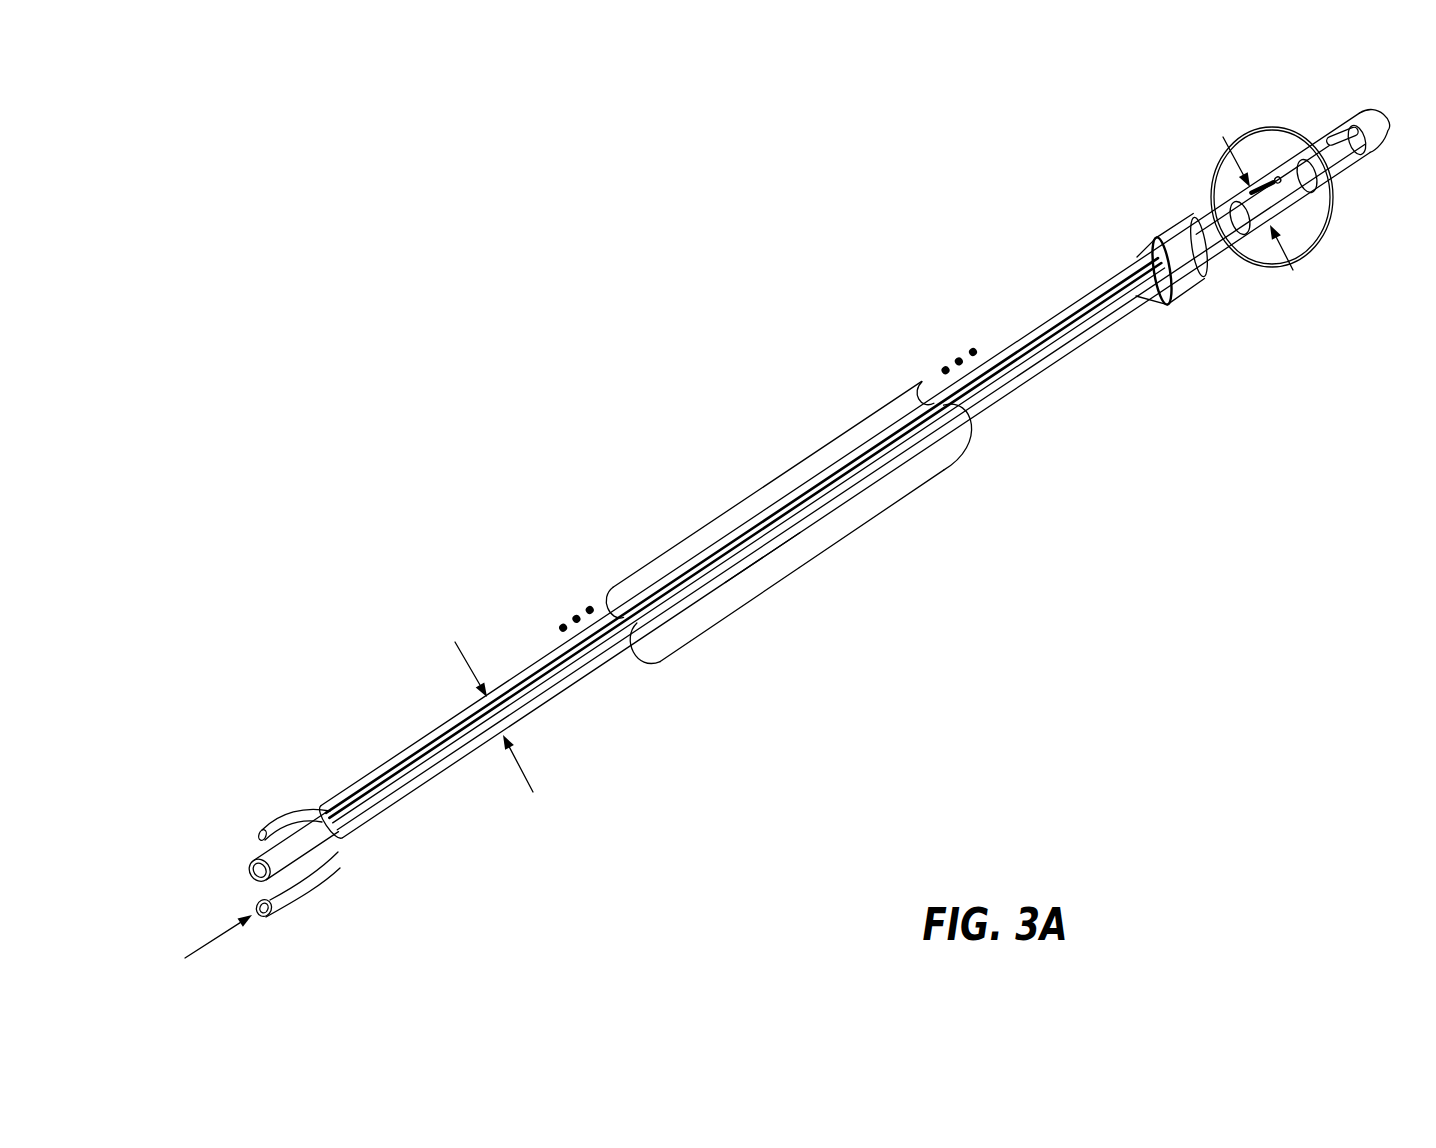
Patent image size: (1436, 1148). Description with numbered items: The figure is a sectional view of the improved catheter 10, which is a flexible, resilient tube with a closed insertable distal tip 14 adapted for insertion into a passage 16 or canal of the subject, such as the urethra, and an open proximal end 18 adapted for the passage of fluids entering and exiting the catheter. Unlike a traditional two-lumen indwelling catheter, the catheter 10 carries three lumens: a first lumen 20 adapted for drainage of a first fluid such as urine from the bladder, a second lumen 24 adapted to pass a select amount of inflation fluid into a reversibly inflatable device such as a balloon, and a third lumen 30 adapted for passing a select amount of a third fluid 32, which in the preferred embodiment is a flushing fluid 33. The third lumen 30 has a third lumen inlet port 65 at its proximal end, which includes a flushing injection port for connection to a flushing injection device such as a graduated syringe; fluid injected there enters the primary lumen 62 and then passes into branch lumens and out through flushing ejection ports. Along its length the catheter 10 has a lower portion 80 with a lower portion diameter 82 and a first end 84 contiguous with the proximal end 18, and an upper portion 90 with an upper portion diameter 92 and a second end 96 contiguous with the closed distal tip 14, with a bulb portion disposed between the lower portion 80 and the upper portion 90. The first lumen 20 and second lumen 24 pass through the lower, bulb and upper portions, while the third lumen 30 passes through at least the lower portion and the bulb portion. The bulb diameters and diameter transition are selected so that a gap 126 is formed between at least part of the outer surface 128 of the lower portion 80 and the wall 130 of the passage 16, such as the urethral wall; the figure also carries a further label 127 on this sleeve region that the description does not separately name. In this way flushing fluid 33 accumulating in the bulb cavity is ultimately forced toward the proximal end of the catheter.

The catheter 10 is at (712, 190).
The closed insertable distal tip 14 is at (1382, 124).
The passage 16 is at (680, 643).
The open proximal end 18 is at (277, 858).
The first lumen 20 is at (260, 852).
The second lumen 24 is at (284, 813).
The third lumen 30 is at (350, 817).
The third fluid 32 is at (208, 942).
The flushing fluid 33 is at (193, 950).
The primary lumen 62 is at (417, 773).
The third lumen inlet port 65 is at (270, 917).
The lower portion 80 is at (1022, 343).
The lower portion diameter 82 is at (482, 713).
The first end 84 is at (247, 872).
The upper portion 90 is at (1285, 162).
The upper portion diameter 92 is at (1257, 175).
The second end 96 is at (1363, 120).
The gap 126 is at (912, 478).
The braid layer 127 is at (857, 525).
The outer surface 128 is at (765, 558).
The wall 130 is at (730, 612).